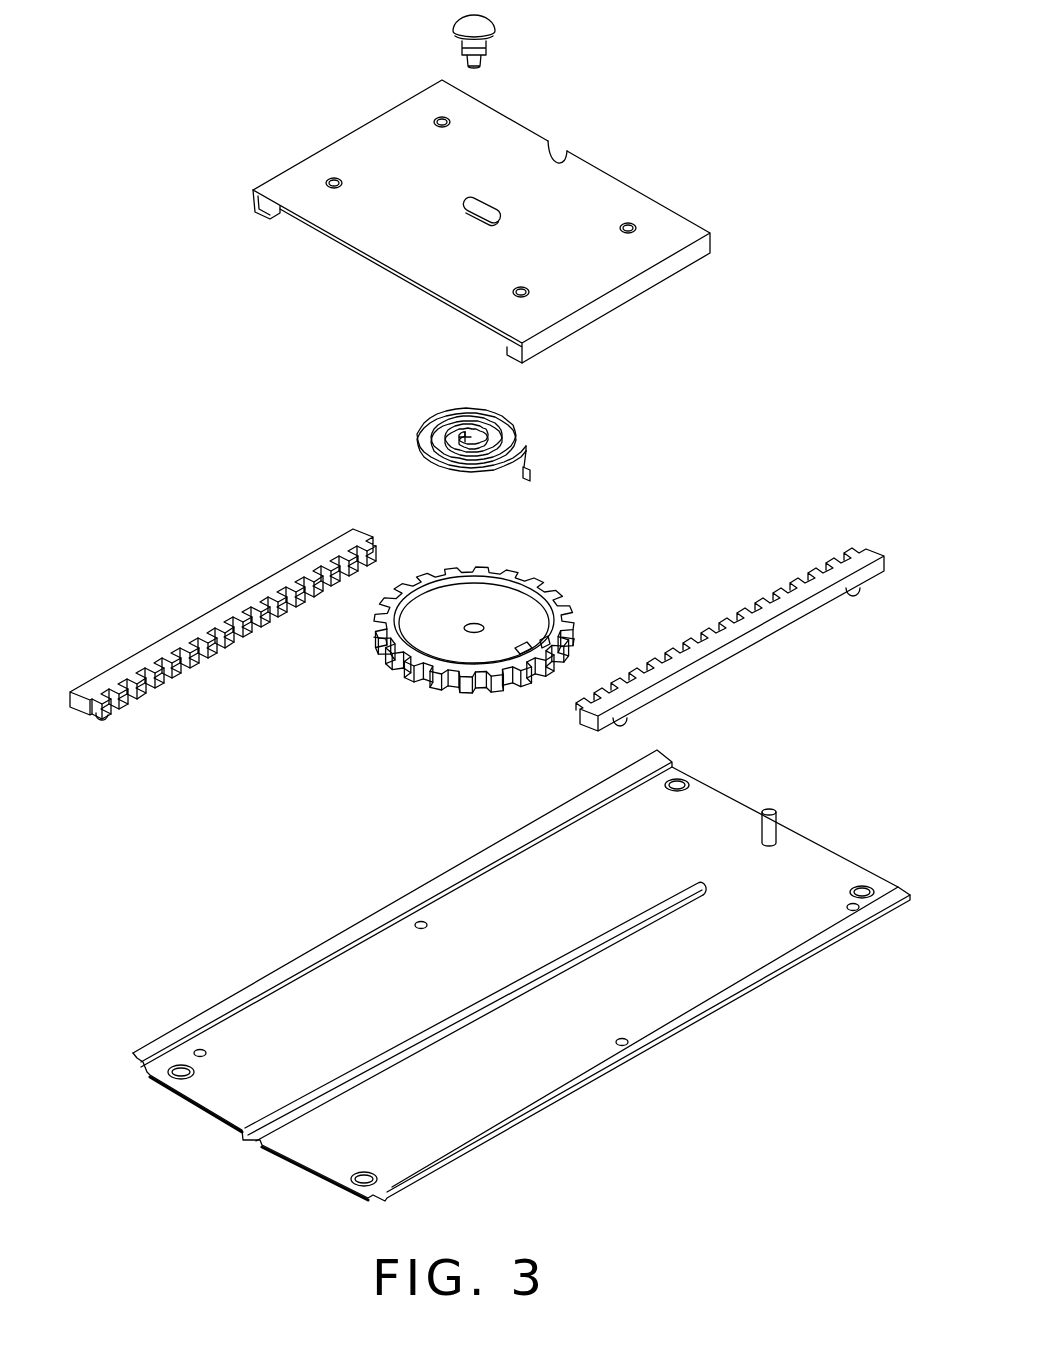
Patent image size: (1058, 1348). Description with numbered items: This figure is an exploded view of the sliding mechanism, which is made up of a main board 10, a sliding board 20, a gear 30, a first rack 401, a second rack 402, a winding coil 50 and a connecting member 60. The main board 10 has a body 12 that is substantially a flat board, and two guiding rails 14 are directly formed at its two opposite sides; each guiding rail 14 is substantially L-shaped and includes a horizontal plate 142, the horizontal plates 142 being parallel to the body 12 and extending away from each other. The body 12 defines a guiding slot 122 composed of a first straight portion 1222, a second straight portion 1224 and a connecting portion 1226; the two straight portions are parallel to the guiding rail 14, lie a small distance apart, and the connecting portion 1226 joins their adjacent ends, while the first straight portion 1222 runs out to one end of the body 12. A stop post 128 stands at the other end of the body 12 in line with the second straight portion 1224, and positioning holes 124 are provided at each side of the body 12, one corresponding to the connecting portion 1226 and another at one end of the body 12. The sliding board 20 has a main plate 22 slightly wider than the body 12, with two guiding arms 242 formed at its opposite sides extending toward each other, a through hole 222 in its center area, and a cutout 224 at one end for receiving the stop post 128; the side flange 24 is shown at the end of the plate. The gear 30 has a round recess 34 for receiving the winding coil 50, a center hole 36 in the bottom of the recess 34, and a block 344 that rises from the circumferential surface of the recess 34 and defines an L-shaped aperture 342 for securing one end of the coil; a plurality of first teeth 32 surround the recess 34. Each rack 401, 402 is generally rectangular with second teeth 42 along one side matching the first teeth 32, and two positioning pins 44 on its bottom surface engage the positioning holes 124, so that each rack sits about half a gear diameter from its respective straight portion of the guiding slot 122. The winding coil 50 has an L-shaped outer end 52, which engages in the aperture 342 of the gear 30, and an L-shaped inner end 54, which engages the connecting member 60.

The main board 10 is at (178, 1000).
The body 12 is at (222, 1102).
The guiding rail 14 is at (462, 1147).
The horizontal plate 142 is at (157, 1045).
The guiding slot 122 is at (534, 1027).
The first straight portion 1222 is at (473, 1007).
The second straight portion 1224 is at (640, 920).
The connecting portion 1226 is at (535, 985).
The positioning hole 124 is at (419, 920).
The stop post 128 is at (774, 810).
The sliding board 20 is at (716, 236).
The main plate 22 is at (365, 233).
The through hole 222 is at (482, 213).
The cutout 224 is at (566, 163).
The side flange 24 is at (267, 209).
The guiding arm 242 is at (508, 352).
The gear 30 is at (373, 673).
The first teeth 32 is at (485, 682).
The recess 34 is at (523, 610).
The center hole 36 is at (473, 623).
The aperture 342 is at (533, 643).
The block 344 is at (547, 643).
The first rack 401 is at (454, 654).
The second rack 402 is at (750, 623).
The second teeth 42 is at (172, 678).
The positioning pin 44 is at (102, 714).
The winding coil 50 is at (543, 430).
The outer end 52 is at (532, 472).
The inner end 54 is at (487, 443).
The connecting member 60 is at (492, 33).